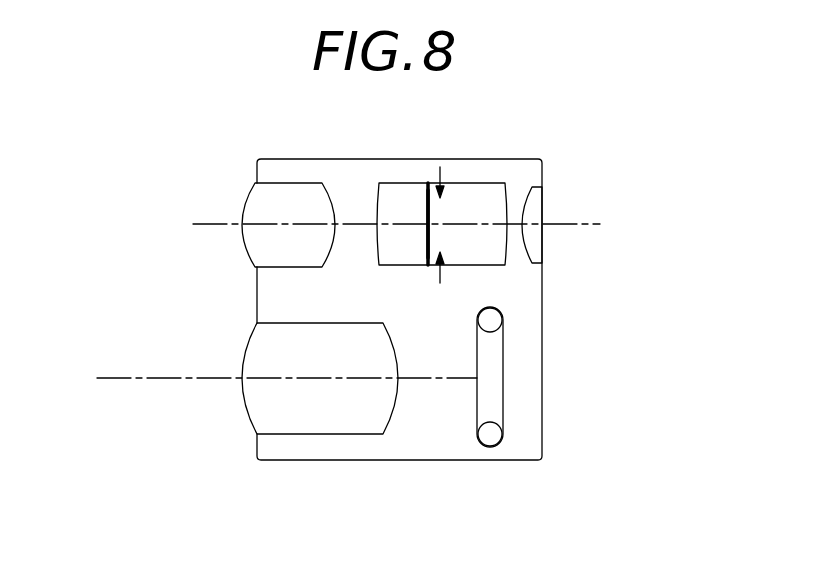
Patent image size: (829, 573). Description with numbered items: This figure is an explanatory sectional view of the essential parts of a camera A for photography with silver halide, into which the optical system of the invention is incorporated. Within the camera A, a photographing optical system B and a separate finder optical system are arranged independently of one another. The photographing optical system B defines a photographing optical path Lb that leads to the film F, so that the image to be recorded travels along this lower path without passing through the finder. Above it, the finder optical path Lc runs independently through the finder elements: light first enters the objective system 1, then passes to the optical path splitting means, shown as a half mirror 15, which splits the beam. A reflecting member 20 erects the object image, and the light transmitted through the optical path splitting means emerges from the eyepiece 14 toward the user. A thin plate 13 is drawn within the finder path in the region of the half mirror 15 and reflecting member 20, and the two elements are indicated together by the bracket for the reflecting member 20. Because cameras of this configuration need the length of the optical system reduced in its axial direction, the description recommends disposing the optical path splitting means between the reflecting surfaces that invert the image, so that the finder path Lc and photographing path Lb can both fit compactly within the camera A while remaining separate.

The objective system 1 is at (287, 196).
The reflecting member 20 is at (508, 151).
The aperture plate 13 is at (440, 276).
The half mirror 15 is at (427, 246).
The eyepiece 14 is at (532, 188).
The camera A is at (422, 462).
The photographing optical system B is at (303, 421).
The film F is at (480, 355).
The finder optical path Lc is at (220, 224).
The photographing optical path Lb is at (160, 378).